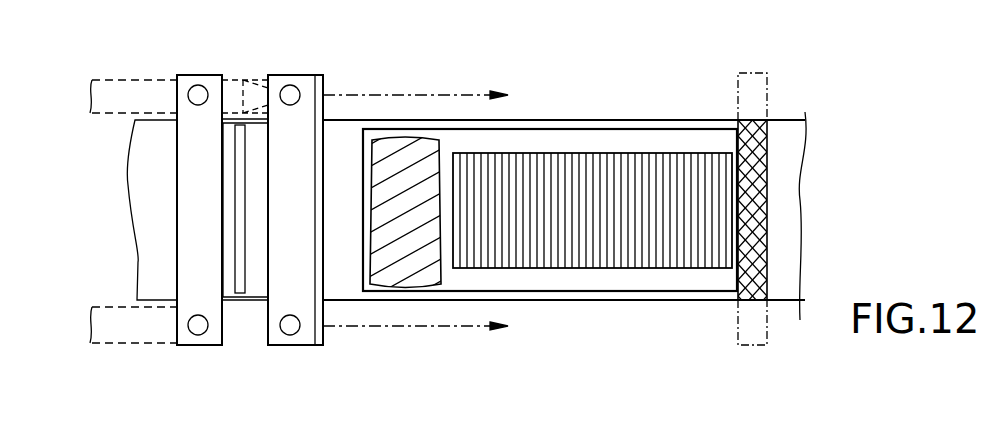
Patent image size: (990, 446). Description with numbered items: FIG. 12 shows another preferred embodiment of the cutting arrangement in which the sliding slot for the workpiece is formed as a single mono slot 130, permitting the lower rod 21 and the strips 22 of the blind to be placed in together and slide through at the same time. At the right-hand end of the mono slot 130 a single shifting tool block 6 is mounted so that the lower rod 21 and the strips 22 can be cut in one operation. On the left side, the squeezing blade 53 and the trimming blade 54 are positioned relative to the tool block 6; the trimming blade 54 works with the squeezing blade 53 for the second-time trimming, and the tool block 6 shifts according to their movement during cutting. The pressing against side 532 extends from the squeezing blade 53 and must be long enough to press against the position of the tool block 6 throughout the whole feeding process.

The tool block 6 is at (757, 102).
The lower rod 21 is at (415, 148).
The strips 22 is at (577, 177).
The squeezing blade 53 is at (292, 345).
The trimming blade 54 is at (203, 342).
The mono slot 130 is at (536, 137).
The pressing against side 532 is at (135, 330).